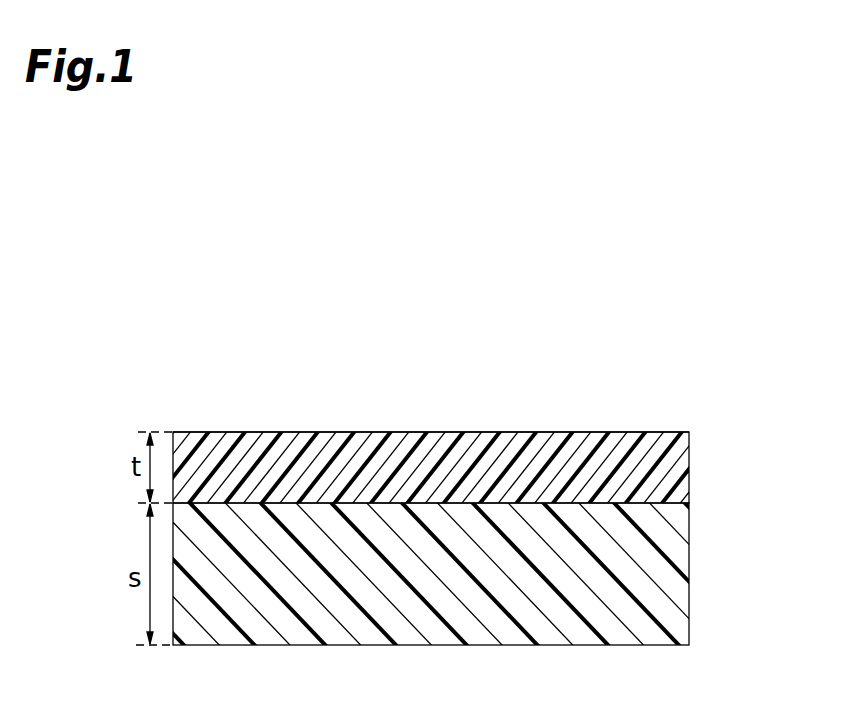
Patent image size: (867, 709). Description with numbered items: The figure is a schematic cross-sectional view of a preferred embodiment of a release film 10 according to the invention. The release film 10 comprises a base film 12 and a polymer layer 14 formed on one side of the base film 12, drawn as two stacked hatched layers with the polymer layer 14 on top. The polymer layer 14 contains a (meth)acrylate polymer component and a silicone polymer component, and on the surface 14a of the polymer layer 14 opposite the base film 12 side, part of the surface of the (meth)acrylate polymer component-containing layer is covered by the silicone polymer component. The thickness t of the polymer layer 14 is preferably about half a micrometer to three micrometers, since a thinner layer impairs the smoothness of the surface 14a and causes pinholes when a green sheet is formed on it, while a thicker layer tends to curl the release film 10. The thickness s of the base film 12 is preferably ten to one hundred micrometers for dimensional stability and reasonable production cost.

The release film 10 is at (650, 351).
The base film 12 is at (676, 575).
The polymer layer 14 is at (676, 470).
The surface of the polymer layer 14a is at (663, 431).